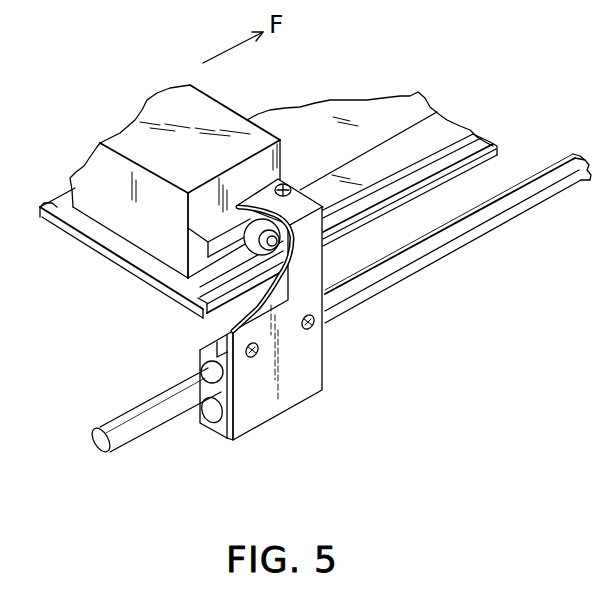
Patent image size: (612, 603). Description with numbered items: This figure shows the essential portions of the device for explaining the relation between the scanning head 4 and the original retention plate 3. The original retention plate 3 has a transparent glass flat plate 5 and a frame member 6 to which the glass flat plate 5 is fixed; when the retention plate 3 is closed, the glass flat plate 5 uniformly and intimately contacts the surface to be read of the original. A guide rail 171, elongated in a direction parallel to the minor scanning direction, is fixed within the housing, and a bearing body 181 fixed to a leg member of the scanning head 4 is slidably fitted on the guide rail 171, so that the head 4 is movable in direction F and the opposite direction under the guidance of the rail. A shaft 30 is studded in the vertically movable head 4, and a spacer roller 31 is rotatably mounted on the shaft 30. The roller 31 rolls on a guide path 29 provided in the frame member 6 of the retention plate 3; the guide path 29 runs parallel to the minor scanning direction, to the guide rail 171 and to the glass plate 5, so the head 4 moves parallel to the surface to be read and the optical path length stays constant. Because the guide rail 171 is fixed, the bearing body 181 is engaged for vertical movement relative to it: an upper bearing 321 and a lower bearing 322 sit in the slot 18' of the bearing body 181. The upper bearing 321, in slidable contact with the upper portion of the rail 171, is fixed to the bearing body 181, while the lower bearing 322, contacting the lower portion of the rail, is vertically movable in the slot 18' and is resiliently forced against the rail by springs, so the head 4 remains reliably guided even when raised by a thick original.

The original retention plate 3 is at (462, 42).
The scanning head 4 is at (215, 117).
The transparent glass flat plate 5 is at (410, 102).
The frame member 6 is at (450, 127).
The guide path 29 is at (388, 182).
The shaft 30 is at (272, 241).
The spacer roller 31 is at (284, 269).
The upper bearing 321 is at (213, 345).
The lower bearing 322 is at (227, 393).
The bearing body 181 is at (217, 427).
The slot 18' is at (237, 438).
The guide rail 171 is at (128, 446).